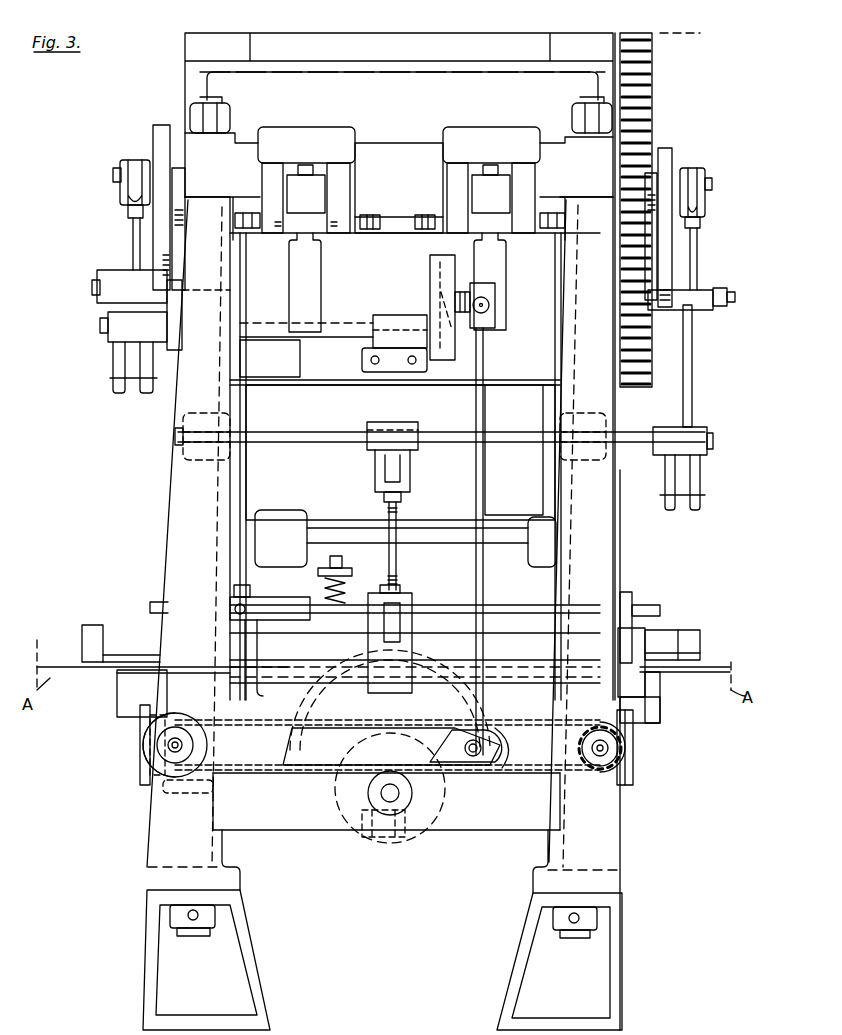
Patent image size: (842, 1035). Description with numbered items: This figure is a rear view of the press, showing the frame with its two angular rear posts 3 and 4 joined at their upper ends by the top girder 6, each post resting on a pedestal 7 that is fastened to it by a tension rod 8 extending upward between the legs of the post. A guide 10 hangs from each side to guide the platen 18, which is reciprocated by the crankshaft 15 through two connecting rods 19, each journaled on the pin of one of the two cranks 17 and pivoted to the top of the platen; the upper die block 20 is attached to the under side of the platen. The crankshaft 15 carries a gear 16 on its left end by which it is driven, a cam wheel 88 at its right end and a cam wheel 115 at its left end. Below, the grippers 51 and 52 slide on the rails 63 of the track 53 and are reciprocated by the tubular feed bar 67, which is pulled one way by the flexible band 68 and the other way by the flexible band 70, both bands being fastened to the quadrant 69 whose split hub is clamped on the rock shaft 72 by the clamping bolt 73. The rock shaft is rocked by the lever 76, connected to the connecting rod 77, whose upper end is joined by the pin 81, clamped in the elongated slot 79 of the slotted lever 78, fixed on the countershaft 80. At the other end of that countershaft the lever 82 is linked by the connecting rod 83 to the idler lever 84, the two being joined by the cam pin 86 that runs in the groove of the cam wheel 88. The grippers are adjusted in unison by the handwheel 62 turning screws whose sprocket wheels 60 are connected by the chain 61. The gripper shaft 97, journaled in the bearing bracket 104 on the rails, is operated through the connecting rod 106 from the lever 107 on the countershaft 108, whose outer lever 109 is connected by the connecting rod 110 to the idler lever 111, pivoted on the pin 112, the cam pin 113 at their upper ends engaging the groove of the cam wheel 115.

The rear post 3 is at (612, 820).
The rear post 4 is at (165, 818).
The top girder 6 is at (426, 58).
The pedestal 7 is at (143, 948).
The tension rod 8 is at (193, 936).
The guide 10 is at (256, 548).
The crankshaft 15 is at (180, 168).
The gear 16 is at (646, 72).
The crank 17 is at (268, 233).
The platen 18 is at (400, 452).
The connecting rod 19 is at (305, 282).
The upper die block 20 is at (345, 572).
The gripper 51 is at (660, 685).
The gripper 52 is at (255, 688).
The track 53 is at (660, 710).
The sprocket wheel 60 is at (618, 752).
The chain 61 is at (278, 772).
The handwheel 62 is at (178, 780).
The rail 63 is at (132, 674).
The tubular feed bar 67 is at (690, 630).
The flexible band 68 is at (76, 660).
The quadrant 69 is at (391, 746).
The flexible band 70 is at (693, 672).
The rock shaft 72 is at (398, 795).
The clamping bolt 73 is at (362, 818).
The lever 76 is at (450, 750).
The connecting rod 77 is at (476, 577).
The slotted lever 78 is at (430, 264).
The elongated slot 79 is at (455, 292).
The countershaft 80 is at (296, 338).
The pin 81 is at (470, 328).
The lever 82 is at (133, 362).
The connecting rod 83 is at (133, 249).
The idler lever 84 is at (120, 166).
The cam pin 86 is at (113, 178).
The cam wheel 88 is at (153, 128).
The gripper shaft 97 is at (650, 605).
The bearing bracket 104 is at (390, 639).
The connecting rod 106 is at (398, 522).
The lever 107 is at (410, 424).
The countershaft 108 is at (343, 428).
The lever 109 is at (686, 476).
The connecting rod 110 is at (692, 387).
The idler lever 111 is at (704, 290).
The pin 112 is at (735, 298).
The cam pin 113 is at (712, 182).
The cam wheel 115 is at (672, 148).